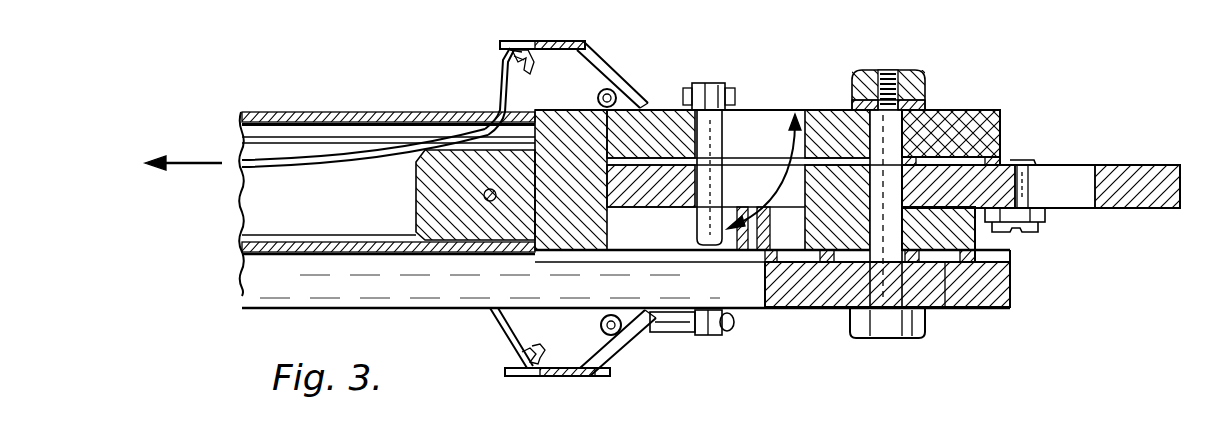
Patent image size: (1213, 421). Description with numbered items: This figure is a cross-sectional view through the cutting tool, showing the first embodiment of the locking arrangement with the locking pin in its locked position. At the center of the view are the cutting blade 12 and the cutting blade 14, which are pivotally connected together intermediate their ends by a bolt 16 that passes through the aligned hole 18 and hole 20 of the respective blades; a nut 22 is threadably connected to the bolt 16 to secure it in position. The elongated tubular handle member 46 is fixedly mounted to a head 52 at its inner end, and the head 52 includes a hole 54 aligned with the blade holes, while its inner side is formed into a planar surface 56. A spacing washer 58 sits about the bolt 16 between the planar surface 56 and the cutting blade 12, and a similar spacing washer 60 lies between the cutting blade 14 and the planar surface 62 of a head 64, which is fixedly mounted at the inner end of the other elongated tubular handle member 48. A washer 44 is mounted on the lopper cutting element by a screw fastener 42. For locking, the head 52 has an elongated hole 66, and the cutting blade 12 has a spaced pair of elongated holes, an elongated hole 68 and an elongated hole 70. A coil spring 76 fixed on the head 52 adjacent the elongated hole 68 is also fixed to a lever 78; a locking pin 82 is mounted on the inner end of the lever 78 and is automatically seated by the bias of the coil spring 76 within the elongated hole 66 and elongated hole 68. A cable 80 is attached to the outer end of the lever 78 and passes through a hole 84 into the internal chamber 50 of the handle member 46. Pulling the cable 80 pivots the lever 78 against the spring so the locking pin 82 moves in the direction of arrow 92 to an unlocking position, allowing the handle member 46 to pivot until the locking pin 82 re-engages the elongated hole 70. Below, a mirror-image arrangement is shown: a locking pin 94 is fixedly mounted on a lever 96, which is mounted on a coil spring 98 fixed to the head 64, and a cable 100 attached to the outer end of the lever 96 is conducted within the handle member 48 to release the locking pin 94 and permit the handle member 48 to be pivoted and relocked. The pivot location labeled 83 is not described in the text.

The cutting blade 12 is at (1151, 152).
The cutting blade 14 is at (975, 270).
The bolt 16 is at (880, 108).
The hole 18 is at (977, 245).
The hole 20 is at (845, 310).
The nut 22 is at (920, 108).
The screw fastener 42 is at (1020, 230).
The washer 44 is at (1038, 212).
The elongated tubular handle member 46 is at (352, 112).
The elongated tubular handle member 48 is at (345, 307).
The internal chamber 50 is at (433, 118).
The head 52 is at (822, 108).
The hole 54 is at (935, 135).
The planar surface 56 is at (985, 160).
The spacing washer 58 is at (985, 125).
The spacing washer 60 is at (945, 260).
The planar surface 62 is at (1000, 275).
The head 64 is at (995, 300).
The elongated hole 66 is at (782, 110).
The elongated hole 68 is at (765, 198).
The elongated hole 70 is at (1062, 178).
The coil spring 76 is at (622, 96).
The lever 78 is at (568, 42).
The cable 80 is at (303, 162).
The locking pin 82 is at (707, 108).
The lower latch arm pivot 83 is at (754, 415).
The hole 84 is at (495, 110).
The arrow 92 is at (771, 305).
The locking pin 94 is at (727, 338).
The lever 96 is at (600, 366).
The coil spring 98 is at (560, 373).
The cable 100 is at (494, 332).